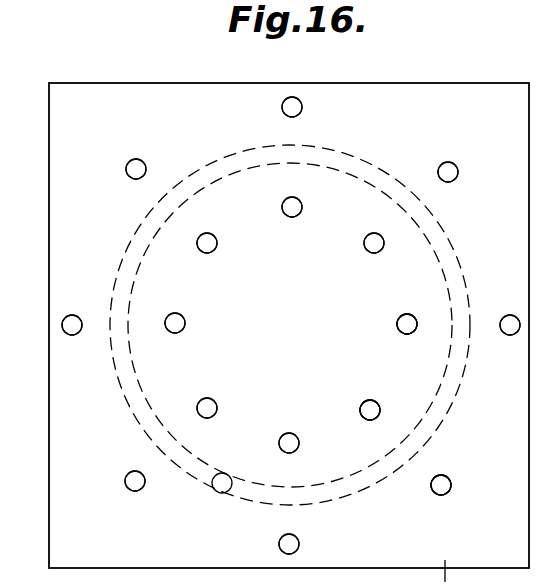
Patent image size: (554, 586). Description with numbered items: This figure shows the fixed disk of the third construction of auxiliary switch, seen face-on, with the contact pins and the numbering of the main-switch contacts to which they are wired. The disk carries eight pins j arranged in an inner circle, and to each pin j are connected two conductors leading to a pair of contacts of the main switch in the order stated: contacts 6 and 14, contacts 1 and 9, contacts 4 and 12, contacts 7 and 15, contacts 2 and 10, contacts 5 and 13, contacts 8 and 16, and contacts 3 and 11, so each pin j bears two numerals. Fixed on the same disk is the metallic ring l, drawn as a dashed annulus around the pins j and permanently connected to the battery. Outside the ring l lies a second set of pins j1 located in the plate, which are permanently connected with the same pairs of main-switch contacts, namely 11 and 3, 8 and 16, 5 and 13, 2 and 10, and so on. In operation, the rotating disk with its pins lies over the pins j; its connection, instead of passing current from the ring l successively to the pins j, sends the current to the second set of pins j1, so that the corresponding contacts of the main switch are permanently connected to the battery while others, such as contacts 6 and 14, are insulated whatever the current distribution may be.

The contact of the main switch 1 is at (278, 544).
The contact of the main switch 2 is at (126, 169).
The contact of the main switch 3 is at (510, 335).
The contact of the main switch 4 is at (128, 474).
The contact of the main switch 5 is at (282, 107).
The contact of the main switch 6 is at (433, 492).
The contact of the main switch 7 is at (72, 335).
The contact of the main switch 8 is at (458, 172).
The contact of the main switch 9 is at (300, 544).
The contact of the main switch 10 is at (146, 169).
The contact of the main switch 11 is at (509, 315).
The contact of the main switch 12 is at (140, 490).
The contact of the main switch 13 is at (302, 107).
The contact of the main switch 14 is at (451, 490).
The contact of the main switch 15 is at (74, 315).
The contact of the main switch 16 is at (438, 172).
The pins j is at (417, 326).
The second set of pins j1 is at (450, 480).
The metallic ring l is at (452, 414).